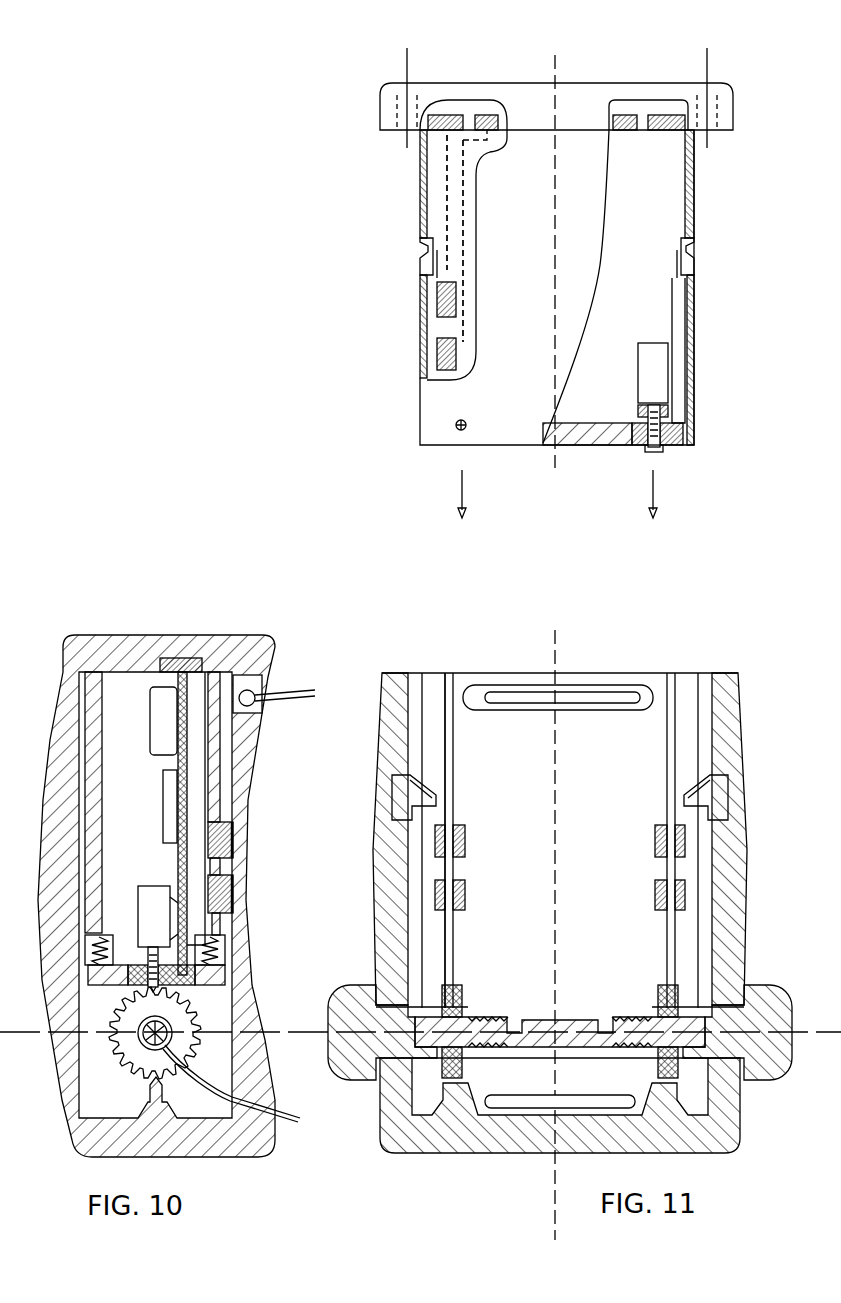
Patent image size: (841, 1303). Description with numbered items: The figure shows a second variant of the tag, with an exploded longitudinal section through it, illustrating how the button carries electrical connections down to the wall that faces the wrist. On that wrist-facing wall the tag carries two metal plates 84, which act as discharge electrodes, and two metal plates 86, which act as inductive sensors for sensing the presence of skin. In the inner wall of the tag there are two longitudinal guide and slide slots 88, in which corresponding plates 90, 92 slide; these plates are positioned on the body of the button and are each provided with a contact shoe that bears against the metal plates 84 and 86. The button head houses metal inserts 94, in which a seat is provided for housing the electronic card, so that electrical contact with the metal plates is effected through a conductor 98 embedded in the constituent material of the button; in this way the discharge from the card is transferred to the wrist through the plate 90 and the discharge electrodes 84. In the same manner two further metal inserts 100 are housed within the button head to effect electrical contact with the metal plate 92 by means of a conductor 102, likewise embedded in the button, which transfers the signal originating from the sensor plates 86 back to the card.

In FIG. 10, the metal plates acting as discharge electrodes 84 is at (243, 897).
In FIG. 11, the metal plates acting as discharge electrodes 84 is at (458, 883).
In FIG. 10, the metal plates acting as inductive sensors 86 is at (243, 843).
In FIG. 11, the metal plates acting as inductive sensors 86 is at (437, 842).
In FIG. 11, the longitudinal guide and slide slots 88 is at (448, 755).
In FIG. 10, the plate 90 is at (237, 915).
In FIG. 11, the plate 90 is at (446, 352).
In FIG. 10, the plate 92 is at (238, 822).
In FIG. 11, the plate 92 is at (446, 298).
In FIG. 10, the metal inserts 94 is at (203, 635).
In FIG. 11, the metal inserts 94 is at (487, 128).
In FIG. 11, the conductor 98 is at (462, 210).
In FIG. 11, the further metal inserts 100 is at (438, 125).
In FIG. 11, the conductor 102 is at (447, 168).